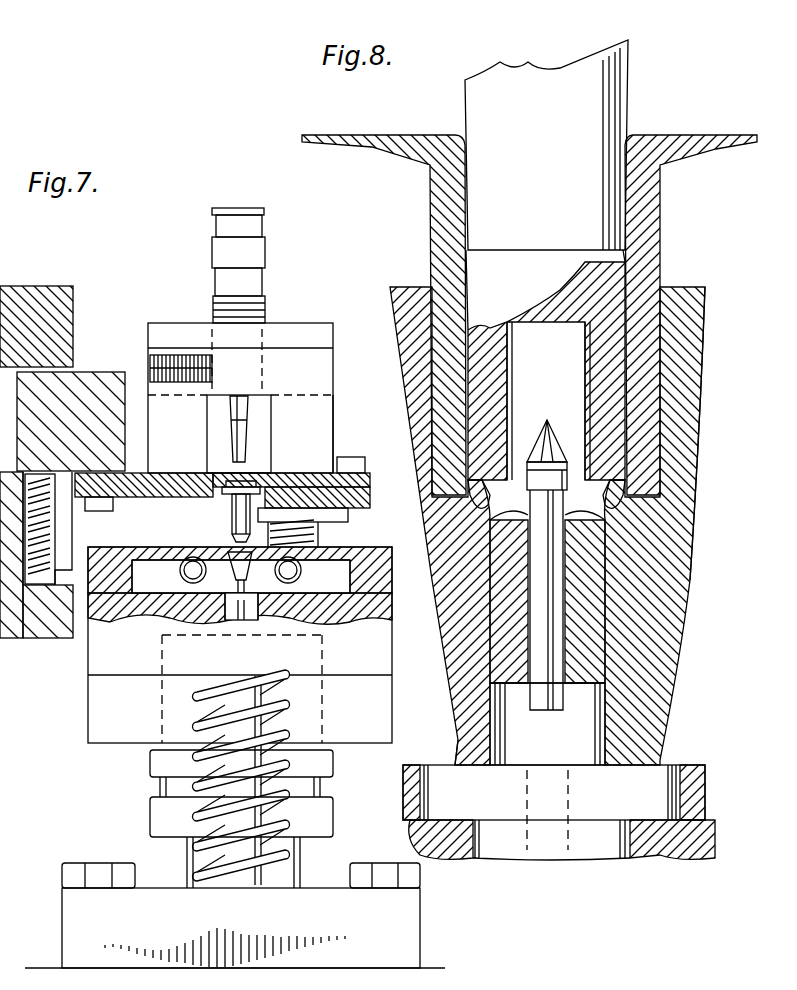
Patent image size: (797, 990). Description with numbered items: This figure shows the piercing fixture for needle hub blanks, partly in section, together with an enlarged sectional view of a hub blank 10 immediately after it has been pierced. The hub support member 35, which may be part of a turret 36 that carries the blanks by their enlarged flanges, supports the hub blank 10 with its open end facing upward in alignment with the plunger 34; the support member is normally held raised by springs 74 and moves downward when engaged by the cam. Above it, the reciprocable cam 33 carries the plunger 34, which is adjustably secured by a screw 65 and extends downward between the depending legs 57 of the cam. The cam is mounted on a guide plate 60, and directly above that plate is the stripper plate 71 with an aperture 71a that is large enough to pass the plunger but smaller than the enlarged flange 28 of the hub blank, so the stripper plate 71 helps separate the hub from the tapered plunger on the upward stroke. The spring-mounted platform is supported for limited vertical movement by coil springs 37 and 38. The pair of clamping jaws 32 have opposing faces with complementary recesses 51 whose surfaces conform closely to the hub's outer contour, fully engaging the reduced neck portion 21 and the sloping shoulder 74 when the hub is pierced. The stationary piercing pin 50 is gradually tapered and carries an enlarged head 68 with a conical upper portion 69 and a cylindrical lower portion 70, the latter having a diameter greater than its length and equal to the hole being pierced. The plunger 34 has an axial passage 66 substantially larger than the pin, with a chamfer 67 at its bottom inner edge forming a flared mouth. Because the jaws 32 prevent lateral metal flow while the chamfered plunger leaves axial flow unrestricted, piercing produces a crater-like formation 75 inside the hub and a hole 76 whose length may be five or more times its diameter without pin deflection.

In FIG. 7, the hub blank 10 is at (232, 512).
In FIG. 8, the hub blank 10 is at (660, 222).
In FIG. 8, the reduced neck portion 21 is at (600, 668).
In FIG. 7, the enlarged flange 28 is at (222, 490).
In FIG. 8, the clamping jaws 32 is at (660, 630).
In FIG. 7, the cam 33 is at (334, 368).
In FIG. 7, the plunger 34 is at (248, 440).
In FIG. 8, the plunger 34 is at (628, 100).
In FIG. 7, the hub support member 35 is at (135, 497).
In FIG. 7, the turret 36 is at (78, 316).
In FIG. 7, the coil spring 37 is at (205, 742).
In FIG. 7, the coil spring 38 is at (265, 700).
In FIG. 8, the piercing pin 50 is at (500, 635).
In FIG. 8, the recesses 51 is at (500, 622).
In FIG. 7, the depending legs 57 is at (325, 427).
In FIG. 7, the guide plate 60 is at (372, 490).
In FIG. 7, the screw 65 is at (148, 362).
In FIG. 8, the axial passage 66 is at (515, 318).
In FIG. 8, the chamfer 67 is at (590, 500).
In FIG. 8, the enlarged head 68 is at (555, 445).
In FIG. 8, the conical upper portion 69 is at (535, 455).
In FIG. 8, the cylindrical lower portion 70 is at (568, 480).
In FIG. 7, the stripper plate 71 is at (307, 473).
In FIG. 7, the aperture 71a is at (247, 473).
In FIG. 7, the springs / shoulder 74 is at (35, 578).
In FIG. 8, the springs / shoulder 74 is at (620, 560).
In FIG. 8, the crater-like formation 75 is at (600, 508).
In FIG. 8, the hole 76 is at (495, 580).